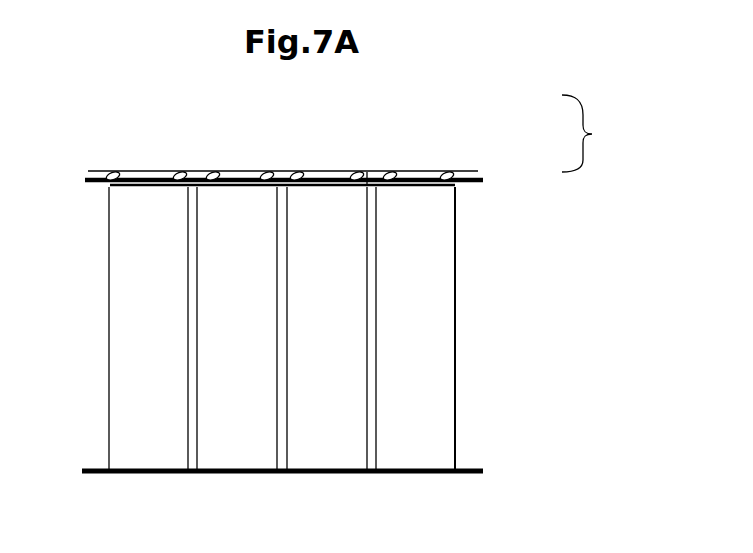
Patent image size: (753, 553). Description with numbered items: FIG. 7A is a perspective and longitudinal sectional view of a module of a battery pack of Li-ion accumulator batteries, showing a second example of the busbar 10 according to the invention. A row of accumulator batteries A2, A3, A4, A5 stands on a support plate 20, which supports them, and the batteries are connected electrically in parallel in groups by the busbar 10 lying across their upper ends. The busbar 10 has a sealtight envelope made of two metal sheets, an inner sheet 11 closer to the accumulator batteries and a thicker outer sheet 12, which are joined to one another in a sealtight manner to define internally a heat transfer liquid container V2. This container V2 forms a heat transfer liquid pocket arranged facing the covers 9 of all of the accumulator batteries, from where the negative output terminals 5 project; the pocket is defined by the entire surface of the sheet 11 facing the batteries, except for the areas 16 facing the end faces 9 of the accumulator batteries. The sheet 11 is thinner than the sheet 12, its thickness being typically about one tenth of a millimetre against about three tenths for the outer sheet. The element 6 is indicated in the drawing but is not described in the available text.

The negative output terminal 5 is at (237, 171).
The side wall 6 is at (110, 370).
The cover 9 is at (125, 187).
The busbar 10 is at (590, 133).
The sheet 11 is at (110, 176).
The outer sheet 12 is at (455, 175).
The areas 16 is at (248, 171).
The support plate 20 is at (82, 472).
The heat transfer liquid container V2 is at (367, 171).
The accumulator battery A2 is at (130, 440).
The accumulator battery A3 is at (253, 445).
The accumulator battery A4 is at (312, 445).
The accumulator battery A5 is at (427, 405).